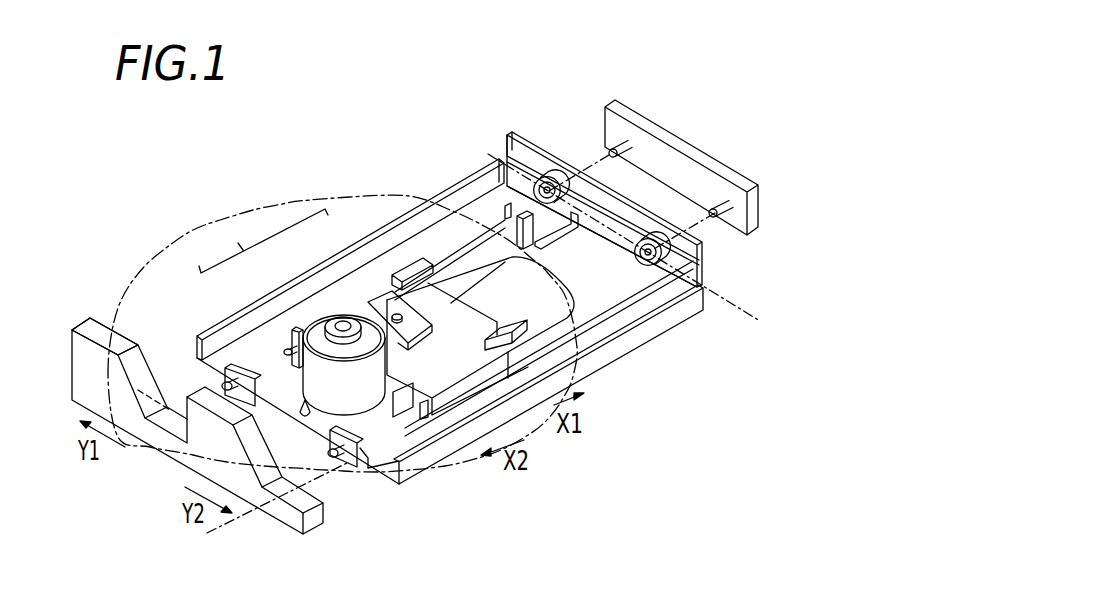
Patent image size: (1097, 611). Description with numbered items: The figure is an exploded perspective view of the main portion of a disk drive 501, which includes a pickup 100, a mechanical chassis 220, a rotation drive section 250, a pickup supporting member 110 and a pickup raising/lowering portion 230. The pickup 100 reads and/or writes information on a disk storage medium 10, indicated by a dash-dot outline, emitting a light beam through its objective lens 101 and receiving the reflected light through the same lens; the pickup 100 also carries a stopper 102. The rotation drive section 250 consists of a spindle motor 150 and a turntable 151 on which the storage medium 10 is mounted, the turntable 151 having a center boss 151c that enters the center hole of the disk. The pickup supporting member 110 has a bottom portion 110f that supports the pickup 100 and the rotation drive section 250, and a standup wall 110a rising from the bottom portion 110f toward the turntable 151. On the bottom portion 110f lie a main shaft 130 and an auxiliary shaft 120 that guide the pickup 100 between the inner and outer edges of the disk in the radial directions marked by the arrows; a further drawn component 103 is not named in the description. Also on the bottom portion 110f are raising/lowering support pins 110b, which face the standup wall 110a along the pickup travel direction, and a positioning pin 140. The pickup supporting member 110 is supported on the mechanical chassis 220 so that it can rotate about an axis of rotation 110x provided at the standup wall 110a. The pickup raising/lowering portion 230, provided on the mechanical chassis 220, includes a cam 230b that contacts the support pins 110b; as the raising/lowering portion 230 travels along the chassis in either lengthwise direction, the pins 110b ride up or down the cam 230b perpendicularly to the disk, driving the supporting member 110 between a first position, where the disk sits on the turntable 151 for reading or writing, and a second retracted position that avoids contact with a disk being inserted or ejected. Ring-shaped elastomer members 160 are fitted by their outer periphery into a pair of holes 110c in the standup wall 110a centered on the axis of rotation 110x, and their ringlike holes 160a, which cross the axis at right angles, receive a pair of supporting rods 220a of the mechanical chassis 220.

The disk storage medium 10 is at (196, 229).
The pickup 100 is at (435, 372).
The objective lens 101 is at (395, 312).
The stopper 102 is at (417, 262).
The guide rail 103 is at (566, 352).
The pickup supporting member 110 is at (638, 368).
The standup wall 110a is at (509, 140).
The raising/lowering support pins 110b is at (228, 366).
The holes 110c is at (519, 165).
The bottom portion 110f is at (384, 440).
The axis of rotation 110x is at (652, 244).
The auxiliary shaft 120 is at (633, 367).
The main shaft 130 is at (482, 226).
The positioning pin 140 is at (302, 418).
The spindle motor 150 is at (300, 368).
The turntable 151 is at (341, 330).
The center boss 151c is at (329, 316).
The elastomer members 160 is at (545, 177).
The ringlike holes 160a is at (567, 184).
The mechanical chassis 220 is at (673, 143).
The supporting rods 220a is at (613, 146).
The pickup raising/lowering portion 230 is at (167, 447).
The cam 230b is at (90, 317).
The rotation drive section 250 is at (263, 241).
The disk drive 501 is at (755, 99).